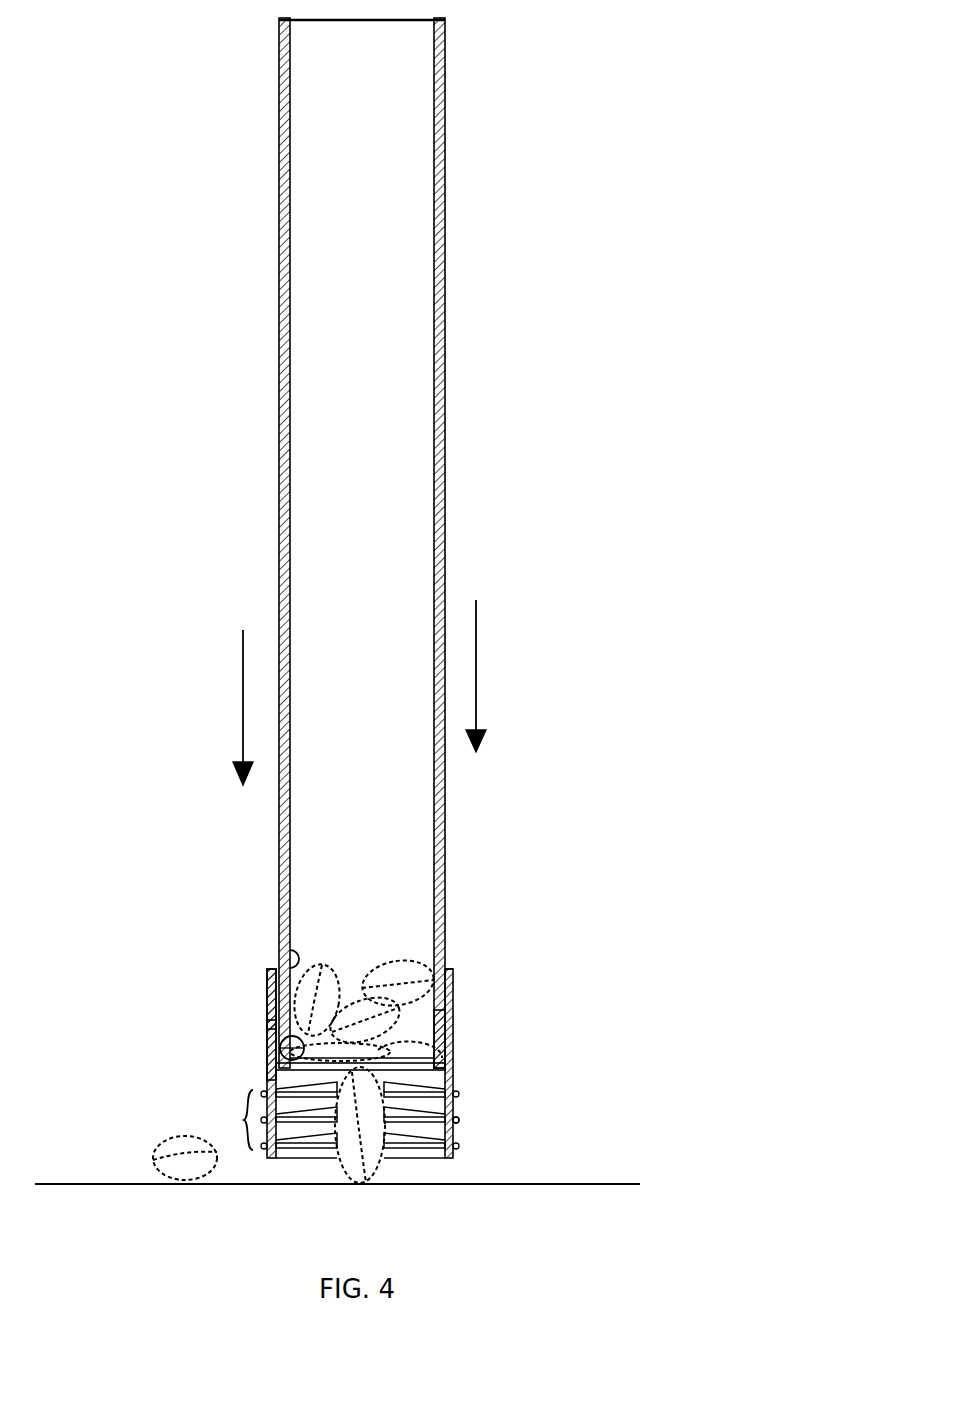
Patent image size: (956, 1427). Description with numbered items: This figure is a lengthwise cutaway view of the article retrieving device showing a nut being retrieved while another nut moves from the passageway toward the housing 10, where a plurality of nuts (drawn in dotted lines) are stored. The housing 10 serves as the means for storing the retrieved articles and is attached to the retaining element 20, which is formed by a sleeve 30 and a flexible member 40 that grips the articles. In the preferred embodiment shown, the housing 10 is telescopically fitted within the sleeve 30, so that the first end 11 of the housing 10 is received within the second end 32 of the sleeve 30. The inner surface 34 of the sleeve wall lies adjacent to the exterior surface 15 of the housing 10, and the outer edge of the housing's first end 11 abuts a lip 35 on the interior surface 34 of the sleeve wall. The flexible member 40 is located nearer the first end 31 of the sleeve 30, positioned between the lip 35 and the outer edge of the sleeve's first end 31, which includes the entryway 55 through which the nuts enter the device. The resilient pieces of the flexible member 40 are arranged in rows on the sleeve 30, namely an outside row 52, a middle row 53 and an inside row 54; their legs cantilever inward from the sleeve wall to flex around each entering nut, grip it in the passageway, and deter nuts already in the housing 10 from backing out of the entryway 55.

The housing 10 is at (450, 249).
The first end of the housing 11 is at (452, 1030).
The exterior surface of the housing wall 15 is at (452, 975).
The retaining element 20 is at (462, 998).
The sleeve 30 is at (267, 1032).
The first end of the sleeve 31 is at (286, 1157).
The second end of the sleeve 32 is at (267, 998).
The inner surface of the sleeve wall 34 is at (278, 940).
The lip 35 is at (274, 1040).
The flexible member 40 is at (245, 1120).
The outside row 52 is at (457, 1147).
The middle row 53 is at (457, 1120).
The inside row 54 is at (456, 1094).
The entryway 55 is at (430, 1160).